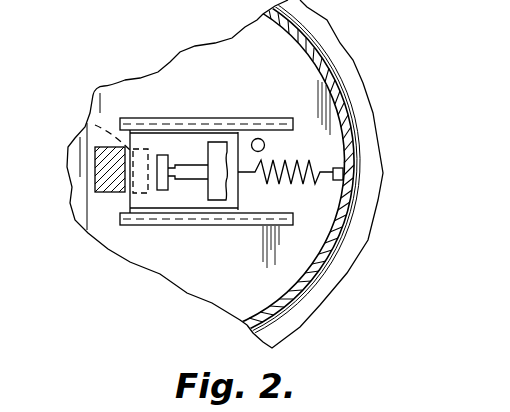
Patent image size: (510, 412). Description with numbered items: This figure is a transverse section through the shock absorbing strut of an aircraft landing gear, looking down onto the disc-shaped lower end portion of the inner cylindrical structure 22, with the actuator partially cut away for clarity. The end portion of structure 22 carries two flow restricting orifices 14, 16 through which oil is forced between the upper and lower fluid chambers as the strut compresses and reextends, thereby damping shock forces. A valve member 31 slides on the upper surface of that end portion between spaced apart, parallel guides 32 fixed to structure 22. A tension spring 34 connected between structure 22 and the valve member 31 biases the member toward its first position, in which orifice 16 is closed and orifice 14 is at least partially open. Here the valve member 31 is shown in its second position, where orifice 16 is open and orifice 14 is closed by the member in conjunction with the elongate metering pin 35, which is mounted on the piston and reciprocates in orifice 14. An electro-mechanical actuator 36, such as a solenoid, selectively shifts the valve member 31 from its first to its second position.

The flow restricting orifice 14 is at (95, 125).
The flow restricting orifice 16 is at (259, 139).
The inner cylindrical structure 22 is at (304, 51).
The valve member 31 is at (173, 200).
The guides 32 is at (183, 117).
The tension spring 34 is at (300, 184).
The metering pin 35 is at (97, 177).
The electro-mechanical actuator 36 is at (222, 198).